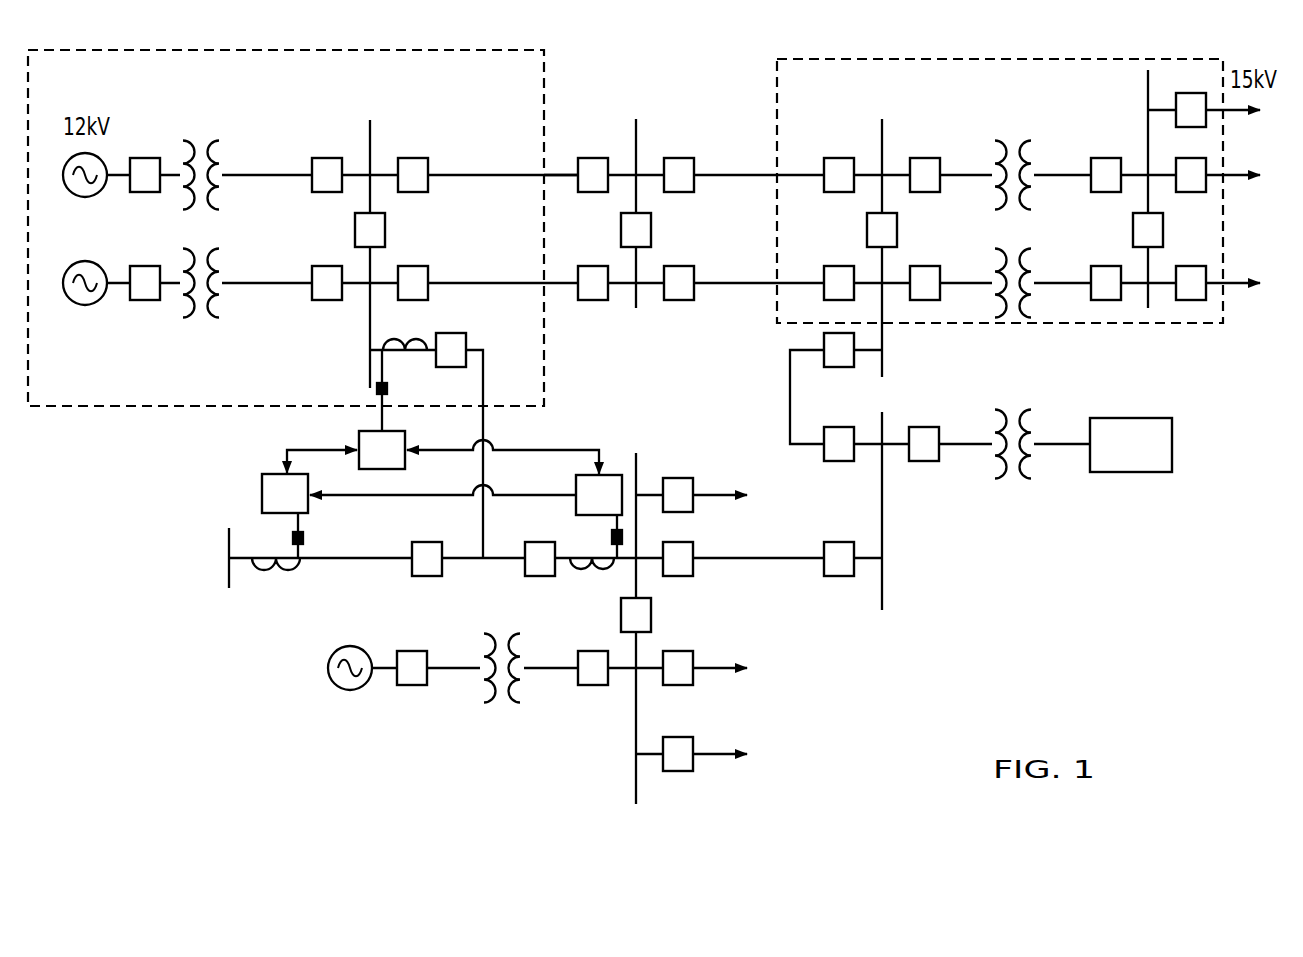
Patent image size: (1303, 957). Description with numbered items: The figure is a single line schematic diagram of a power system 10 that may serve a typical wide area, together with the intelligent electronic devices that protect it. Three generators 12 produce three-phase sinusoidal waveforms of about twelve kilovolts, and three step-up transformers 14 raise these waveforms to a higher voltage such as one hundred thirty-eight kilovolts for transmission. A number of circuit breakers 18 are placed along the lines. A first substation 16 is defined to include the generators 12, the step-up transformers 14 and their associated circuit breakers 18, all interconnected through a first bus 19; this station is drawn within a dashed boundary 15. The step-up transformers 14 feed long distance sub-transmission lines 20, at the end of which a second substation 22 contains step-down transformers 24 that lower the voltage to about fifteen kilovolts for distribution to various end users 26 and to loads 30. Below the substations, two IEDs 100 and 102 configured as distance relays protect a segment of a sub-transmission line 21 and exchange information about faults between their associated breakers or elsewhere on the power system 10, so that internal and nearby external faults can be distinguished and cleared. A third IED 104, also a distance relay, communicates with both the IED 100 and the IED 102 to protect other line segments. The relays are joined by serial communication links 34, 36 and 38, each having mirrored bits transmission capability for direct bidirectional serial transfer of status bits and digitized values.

The power system 10 is at (702, 71).
The generator 12 is at (81, 197).
The step-up transformer 14 is at (202, 135).
The generating station 15 is at (266, 50).
The first substation 16 is at (545, 119).
The circuit breaker 18 is at (410, 192).
The first bus 19 is at (369, 133).
The sub-transmission line 20 is at (560, 175).
The sub-transmission line 21 is at (243, 566).
The second substation 22 is at (1058, 58).
The step-down transformer 24 is at (1012, 138).
The end user 26 is at (1237, 112).
The load 30 is at (1173, 444).
The serial communication link 34 is at (348, 497).
The serial communication link 36 is at (553, 450).
The serial communication link 38 is at (306, 448).
The IED 100 is at (285, 493).
The IED 102 is at (599, 495).
The IED 104 is at (382, 450).